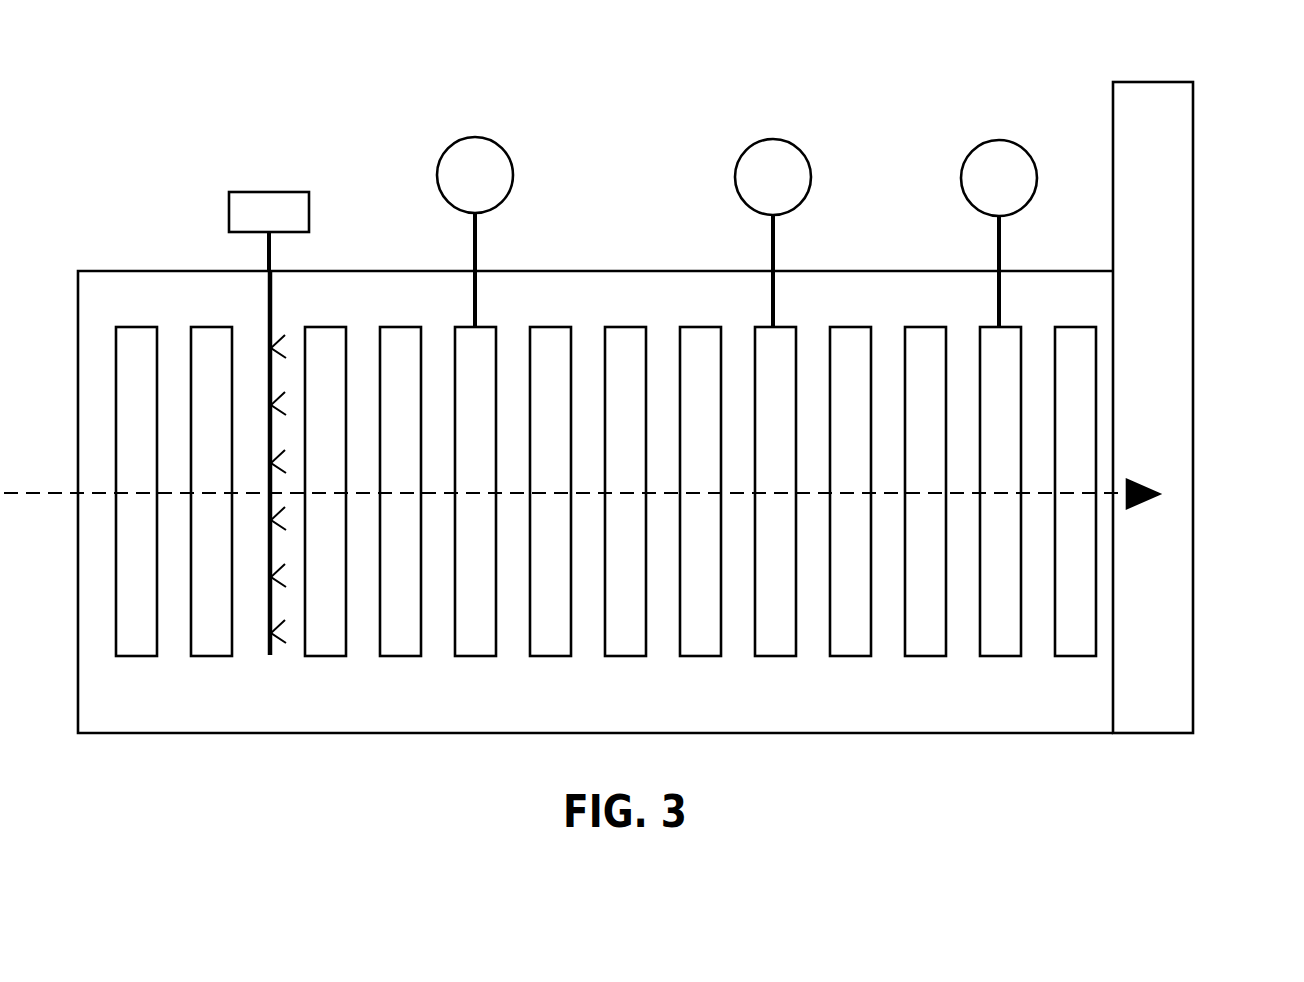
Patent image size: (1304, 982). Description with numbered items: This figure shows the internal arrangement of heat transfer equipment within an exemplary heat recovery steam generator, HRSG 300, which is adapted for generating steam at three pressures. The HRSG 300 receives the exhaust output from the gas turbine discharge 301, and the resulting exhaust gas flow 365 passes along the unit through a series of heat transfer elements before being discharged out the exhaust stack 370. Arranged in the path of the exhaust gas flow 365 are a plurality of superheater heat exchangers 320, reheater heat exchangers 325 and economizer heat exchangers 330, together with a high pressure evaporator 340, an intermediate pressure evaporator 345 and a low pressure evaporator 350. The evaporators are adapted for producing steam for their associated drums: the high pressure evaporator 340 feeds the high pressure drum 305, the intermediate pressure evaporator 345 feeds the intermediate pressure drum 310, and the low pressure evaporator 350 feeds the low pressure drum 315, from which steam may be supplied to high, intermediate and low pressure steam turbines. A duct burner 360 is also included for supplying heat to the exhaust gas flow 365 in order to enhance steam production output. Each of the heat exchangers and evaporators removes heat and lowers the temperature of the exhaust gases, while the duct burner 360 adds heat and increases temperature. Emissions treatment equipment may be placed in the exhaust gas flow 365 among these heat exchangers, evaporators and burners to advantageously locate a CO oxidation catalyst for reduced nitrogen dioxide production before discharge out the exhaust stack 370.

The HRSG 300 is at (273, 101).
The gas turbine discharge 301 is at (35, 490).
The high pressure drum 305 is at (495, 140).
The intermediate pressure drum 310 is at (793, 142).
The low pressure drum 315 is at (1020, 142).
The superheater heat exchangers 320 is at (140, 656).
The reheater heat exchangers 325 is at (215, 656).
The economizer heat exchangers 330 is at (629, 656).
The high pressure evaporator 340 is at (479, 656).
The intermediate pressure evaporator 345 is at (779, 656).
The low pressure evaporator 350 is at (1004, 656).
The duct burner 360 is at (310, 213).
The exhaust gas flow 365 is at (1137, 485).
The exhaust stack 370 is at (1193, 365).